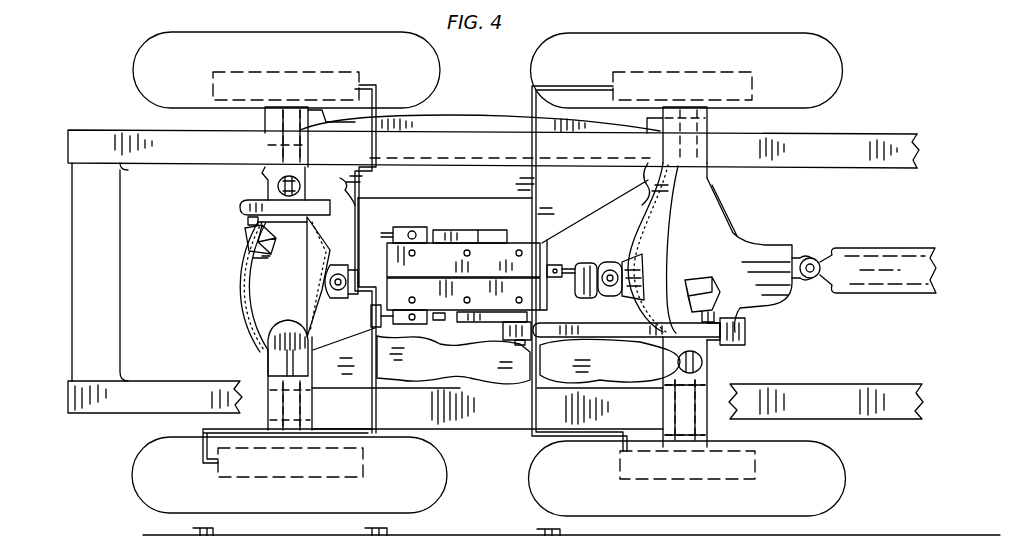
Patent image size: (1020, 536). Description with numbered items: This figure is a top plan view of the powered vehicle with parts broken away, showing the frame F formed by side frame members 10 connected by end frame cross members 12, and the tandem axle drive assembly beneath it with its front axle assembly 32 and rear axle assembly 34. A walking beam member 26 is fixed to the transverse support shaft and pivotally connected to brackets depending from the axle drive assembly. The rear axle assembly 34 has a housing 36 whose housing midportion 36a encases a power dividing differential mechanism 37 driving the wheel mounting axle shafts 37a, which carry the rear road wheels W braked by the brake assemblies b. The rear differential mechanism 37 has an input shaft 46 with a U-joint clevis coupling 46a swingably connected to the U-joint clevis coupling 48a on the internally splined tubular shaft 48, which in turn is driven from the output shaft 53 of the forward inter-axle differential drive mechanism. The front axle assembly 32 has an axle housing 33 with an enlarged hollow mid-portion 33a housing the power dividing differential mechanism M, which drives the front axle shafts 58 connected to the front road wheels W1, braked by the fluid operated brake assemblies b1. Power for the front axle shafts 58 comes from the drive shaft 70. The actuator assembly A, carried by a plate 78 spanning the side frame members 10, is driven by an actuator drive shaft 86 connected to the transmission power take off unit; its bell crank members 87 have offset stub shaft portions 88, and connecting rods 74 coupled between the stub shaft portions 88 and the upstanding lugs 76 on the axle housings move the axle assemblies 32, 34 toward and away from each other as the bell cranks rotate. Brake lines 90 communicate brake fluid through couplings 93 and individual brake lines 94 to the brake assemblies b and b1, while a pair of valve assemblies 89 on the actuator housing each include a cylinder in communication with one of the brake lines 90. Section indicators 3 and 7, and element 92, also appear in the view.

The side frame members 10 is at (95, 143).
The end frame cross members 12 is at (102, 237).
The walking beam member 26 is at (484, 412).
The front axle assembly 32 is at (736, 346).
The axle housing 33 is at (708, 185).
The enlarged hollow mid-portion 33a is at (730, 239).
The rear axle assembly 34 is at (234, 233).
The housing 36 is at (267, 165).
The housing midportion 36a is at (242, 299).
The power dividing differential mechanism 37 is at (265, 326).
The wheel mounting axle shafts 37a is at (275, 189).
The input shaft 46 is at (330, 282).
The U-joint clevis coupling 46a is at (347, 263).
The internally splined tubular shaft 48 is at (372, 270).
The U-joint clevis coupling 48a is at (350, 295).
The output shaft 53 is at (628, 268).
The front axle shafts 58 is at (678, 362).
The drive shaft 70 is at (868, 290).
The connecting rods 74 is at (243, 230).
The upstanding lugs 76 is at (262, 258).
The plate 78 is at (327, 346).
The actuator drive shaft 86 is at (549, 267).
The bell crank members 87 is at (507, 231).
The stub shaft portions 88 is at (478, 229).
The valve assemblies 89 is at (447, 236).
The brake lines 90 is at (408, 232).
The valve block 92 is at (462, 232).
The couplings 93 is at (372, 206).
The individual brake lines 94 is at (377, 139).
The rear road wheels W is at (152, 35).
The front road wheels W1 is at (823, 60).
The brake assemblies b is at (288, 72).
The fluid operated brake assemblies b1 is at (752, 82).
The frame F is at (78, 110).
The power dividing differential mechanism M is at (750, 219).
The actuator assembly A is at (490, 230).
The section line 3 is at (160, 468).
The section line 7 is at (555, 280).